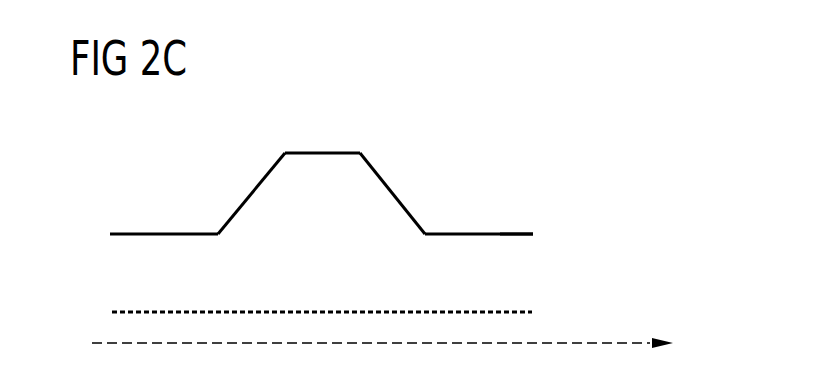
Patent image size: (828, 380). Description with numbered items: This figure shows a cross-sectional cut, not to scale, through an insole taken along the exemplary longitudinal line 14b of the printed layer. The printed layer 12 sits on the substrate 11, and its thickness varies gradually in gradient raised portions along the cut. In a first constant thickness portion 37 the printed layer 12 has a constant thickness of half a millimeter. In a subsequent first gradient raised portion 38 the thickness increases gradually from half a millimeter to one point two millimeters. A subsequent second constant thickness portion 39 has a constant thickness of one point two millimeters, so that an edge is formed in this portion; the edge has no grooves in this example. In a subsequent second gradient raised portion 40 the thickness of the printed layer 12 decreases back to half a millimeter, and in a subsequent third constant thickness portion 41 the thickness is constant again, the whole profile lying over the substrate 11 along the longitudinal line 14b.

The first constant thickness portion 37 is at (218, 183).
The first gradient raised portion 38 is at (282, 147).
The second constant thickness portion 39 is at (360, 117).
The second gradient raised portion 40 is at (425, 145).
The third constant thickness portion 41 is at (533, 185).
The substrate 11 is at (310, 312).
The printed layer 12 is at (528, 235).
The longitudinal line 14b is at (88, 345).